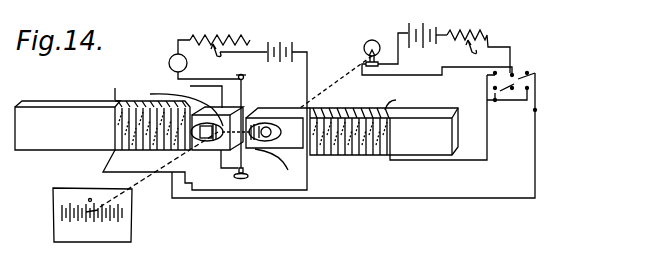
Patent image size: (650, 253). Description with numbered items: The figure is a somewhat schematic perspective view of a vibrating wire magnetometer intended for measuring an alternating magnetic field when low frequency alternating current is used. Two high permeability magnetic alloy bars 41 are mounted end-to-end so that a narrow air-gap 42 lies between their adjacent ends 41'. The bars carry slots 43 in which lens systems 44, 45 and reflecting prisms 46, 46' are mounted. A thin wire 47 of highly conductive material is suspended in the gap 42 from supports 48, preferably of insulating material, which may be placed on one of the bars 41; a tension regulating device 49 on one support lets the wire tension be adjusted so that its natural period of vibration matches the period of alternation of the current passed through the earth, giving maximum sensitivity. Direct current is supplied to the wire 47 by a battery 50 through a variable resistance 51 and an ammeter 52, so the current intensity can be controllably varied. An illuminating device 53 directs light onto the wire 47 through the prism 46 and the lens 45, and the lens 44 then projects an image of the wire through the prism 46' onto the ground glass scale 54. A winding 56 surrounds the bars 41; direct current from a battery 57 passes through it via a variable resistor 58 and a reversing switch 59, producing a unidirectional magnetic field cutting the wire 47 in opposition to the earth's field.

The magnetic alloy bars 41 is at (236, 128).
The adjacent ends 41' is at (221, 130).
The air-gap 42 is at (244, 150).
The slots 43 is at (200, 135).
The lens system 44 is at (215, 150).
The lens system 45 is at (257, 118).
The reflecting prism 46 is at (280, 136).
The reflecting prism 46' is at (201, 126).
The thin wire 47 is at (246, 80).
The supports 48 is at (210, 178).
The tension regulating device 49 is at (248, 176).
The battery 50 is at (291, 40).
The variable resistance 51 is at (249, 38).
The ammeter 52 is at (168, 63).
The illuminating device 53 is at (364, 62).
The ground glass scale 54 is at (84, 190).
The winding 56 is at (258, 88).
The battery 57 is at (405, 26).
The variable resistor 58 is at (478, 30).
The reversing switch 59 is at (537, 78).